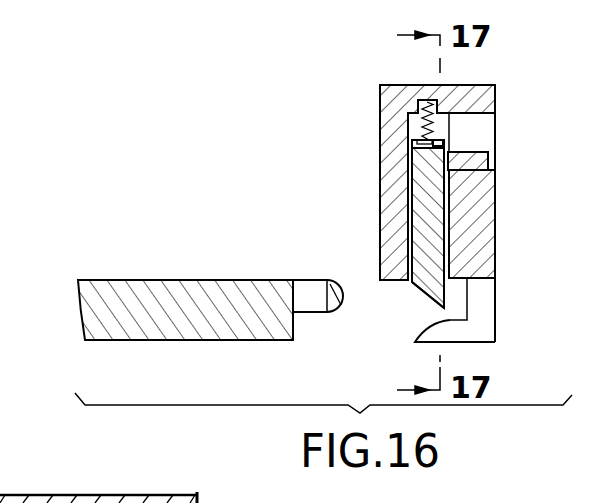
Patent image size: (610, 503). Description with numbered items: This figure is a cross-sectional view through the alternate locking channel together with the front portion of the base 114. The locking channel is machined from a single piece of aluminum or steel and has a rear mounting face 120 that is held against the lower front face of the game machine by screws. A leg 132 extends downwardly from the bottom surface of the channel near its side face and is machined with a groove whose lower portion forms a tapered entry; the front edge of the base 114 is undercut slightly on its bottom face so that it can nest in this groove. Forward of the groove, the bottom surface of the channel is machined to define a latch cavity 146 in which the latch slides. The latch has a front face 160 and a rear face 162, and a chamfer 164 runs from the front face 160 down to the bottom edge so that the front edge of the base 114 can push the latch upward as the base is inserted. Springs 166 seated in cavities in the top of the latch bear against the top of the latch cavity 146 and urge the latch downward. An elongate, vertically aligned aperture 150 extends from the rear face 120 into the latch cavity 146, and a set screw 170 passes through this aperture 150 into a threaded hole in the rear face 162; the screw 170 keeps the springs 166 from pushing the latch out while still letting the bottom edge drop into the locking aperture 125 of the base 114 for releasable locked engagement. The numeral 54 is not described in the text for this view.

The base 114 is at (90, 280).
The locking aperture 125 is at (300, 280).
The front face 160 is at (406, 205).
The elongate aperture 150 is at (484, 114).
The set screw 170 is at (489, 160).
The rear mounting face 120 is at (496, 210).
The latch cavity 146 is at (444, 243).
The chamfer 164 is at (423, 292).
The rear face 162 is at (446, 292).
The leg 132 is at (496, 343).
The base 54 is at (98, 474).
The spring 166 is at (70, 495).